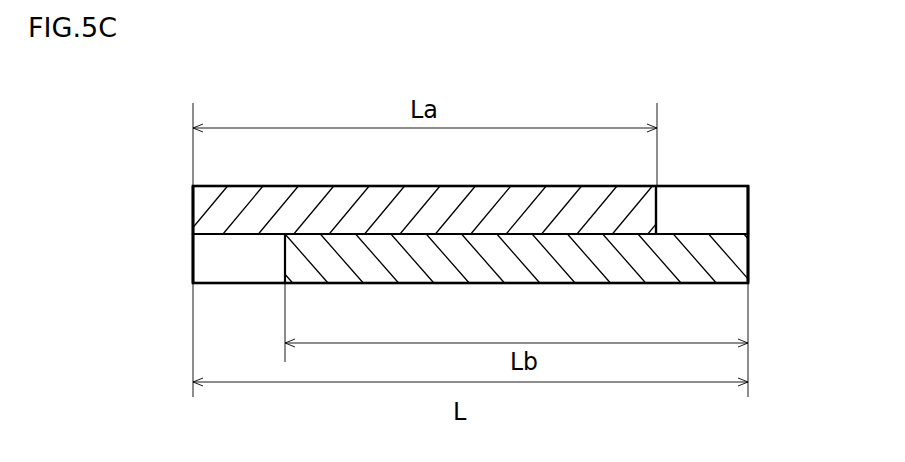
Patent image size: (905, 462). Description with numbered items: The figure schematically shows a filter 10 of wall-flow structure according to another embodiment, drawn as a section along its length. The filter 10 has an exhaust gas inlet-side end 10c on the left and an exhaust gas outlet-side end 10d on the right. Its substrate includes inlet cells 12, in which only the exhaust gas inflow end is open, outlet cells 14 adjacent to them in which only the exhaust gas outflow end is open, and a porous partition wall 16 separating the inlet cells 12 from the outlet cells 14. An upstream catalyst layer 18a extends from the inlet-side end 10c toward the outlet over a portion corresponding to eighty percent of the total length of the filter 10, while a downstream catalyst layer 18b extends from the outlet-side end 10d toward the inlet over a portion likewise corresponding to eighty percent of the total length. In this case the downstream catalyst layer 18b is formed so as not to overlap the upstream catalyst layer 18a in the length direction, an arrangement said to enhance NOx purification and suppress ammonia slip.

The filter 10 is at (679, 136).
The inlet cells 12 is at (493, 173).
The outlet cells 14 is at (493, 322).
The porous partition wall 16 is at (723, 186).
The upstream catalyst layer 18a is at (278, 195).
The downstream catalyst layer 18b is at (693, 270).
The exhaust gas inlet-side end 10c is at (193, 215).
The exhaust gas outlet-side end 10d is at (749, 221).